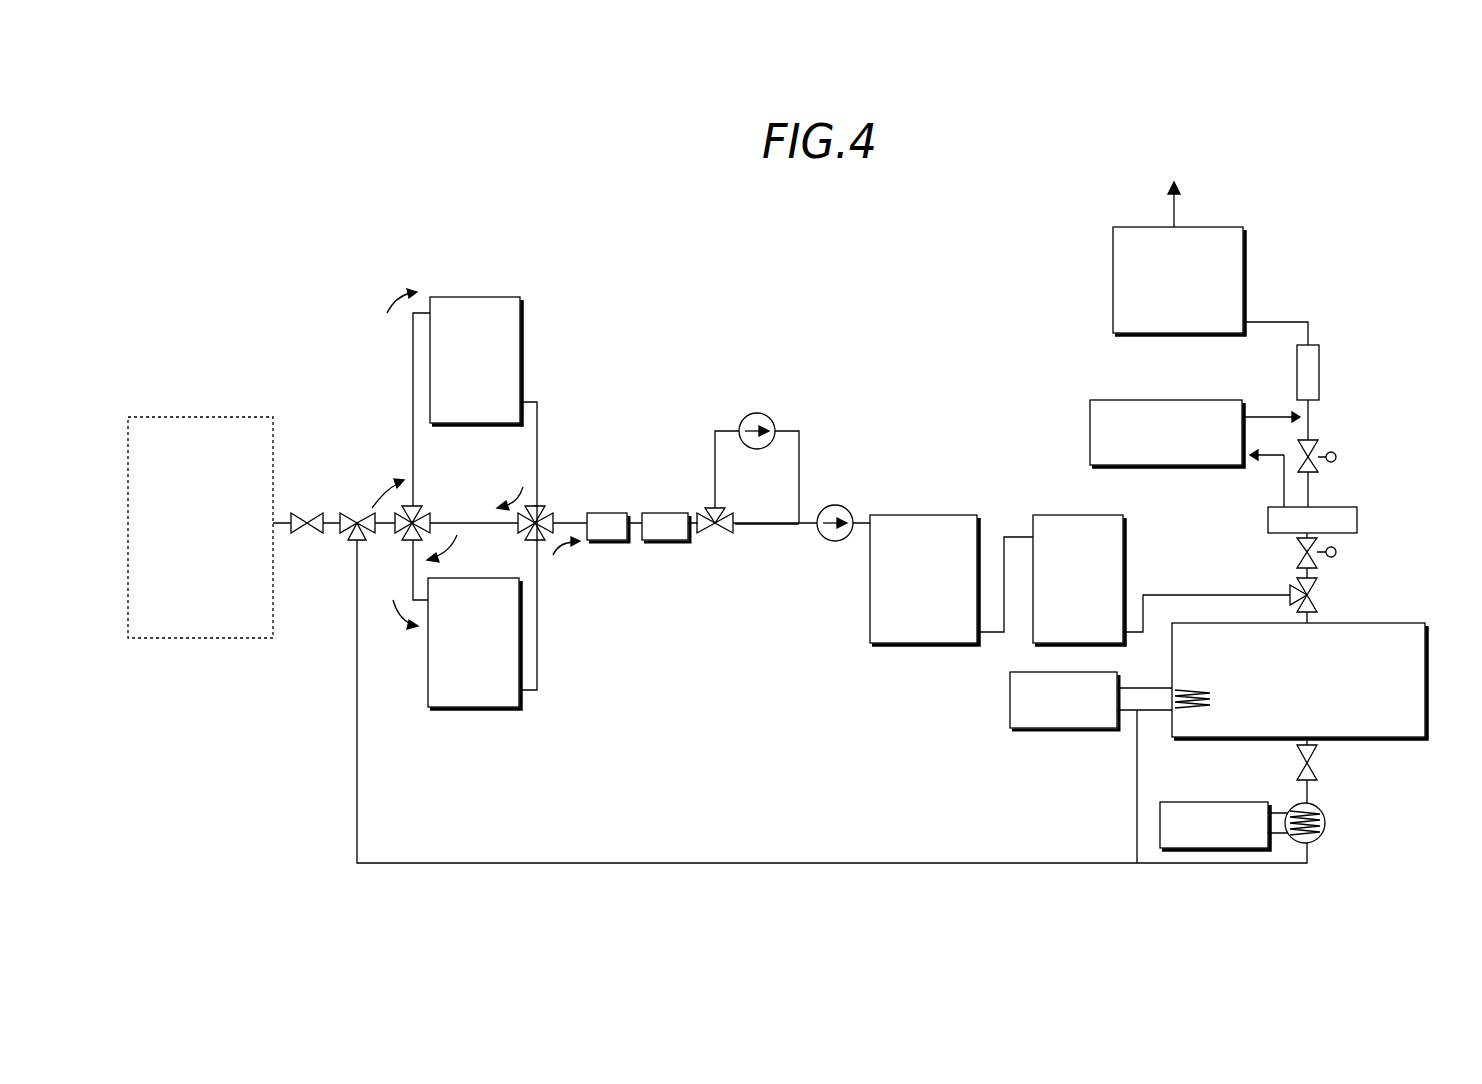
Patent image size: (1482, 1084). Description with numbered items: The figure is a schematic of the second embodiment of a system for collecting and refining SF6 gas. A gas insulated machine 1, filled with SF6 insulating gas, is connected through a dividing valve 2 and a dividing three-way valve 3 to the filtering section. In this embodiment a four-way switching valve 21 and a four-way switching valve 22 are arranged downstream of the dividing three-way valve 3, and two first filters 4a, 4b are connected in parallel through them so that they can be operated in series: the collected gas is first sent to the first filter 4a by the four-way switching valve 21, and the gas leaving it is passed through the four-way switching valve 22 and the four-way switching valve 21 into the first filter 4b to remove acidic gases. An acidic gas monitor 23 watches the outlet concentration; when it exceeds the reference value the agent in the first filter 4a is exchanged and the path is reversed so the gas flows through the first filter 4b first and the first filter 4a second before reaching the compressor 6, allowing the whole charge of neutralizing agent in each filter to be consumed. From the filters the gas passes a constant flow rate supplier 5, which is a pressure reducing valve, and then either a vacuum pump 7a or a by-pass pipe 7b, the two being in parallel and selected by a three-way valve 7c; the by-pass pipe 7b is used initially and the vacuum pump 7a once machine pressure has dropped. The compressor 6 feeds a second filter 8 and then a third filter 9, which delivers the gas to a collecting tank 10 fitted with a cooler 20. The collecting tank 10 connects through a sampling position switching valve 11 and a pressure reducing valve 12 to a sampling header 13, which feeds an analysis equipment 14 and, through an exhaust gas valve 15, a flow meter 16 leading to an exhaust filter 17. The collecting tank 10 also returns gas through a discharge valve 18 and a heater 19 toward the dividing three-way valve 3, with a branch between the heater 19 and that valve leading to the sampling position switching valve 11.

The gas insulated machine 1 is at (178, 417).
The dividing valve 2 is at (318, 512).
The dividing three-way valve 3 is at (352, 540).
The first filter 4a is at (462, 296).
The first filter 4b is at (465, 710).
The constant flow rate supplier 5 is at (660, 542).
The compressor 6 is at (843, 508).
The vacuum pump 7a is at (765, 414).
The by-pass pipe 7b is at (750, 526).
The three-way valve 7c is at (719, 535).
The second filter 8 is at (903, 514).
The third filter 9 is at (1080, 514).
The collecting tank 10 is at (1427, 665).
The sampling position switching valve 11 is at (1320, 598).
The pressure reducing valve 12 is at (1337, 555).
The sampling header 13 is at (1357, 514).
The analysis equipment 14 is at (1122, 399).
The exhaust gas valve 15 is at (1318, 447).
The flow meter 16 is at (1320, 365).
The exhaust filter 17 is at (1245, 266).
The discharge valve 18 is at (1320, 770).
The heater 19 is at (1180, 798).
The cooler 20 is at (1010, 700).
The four-way switching valve 21 is at (405, 540).
The four-way switching valve 22 is at (540, 540).
The acidic gas monitor 23 is at (600, 512).